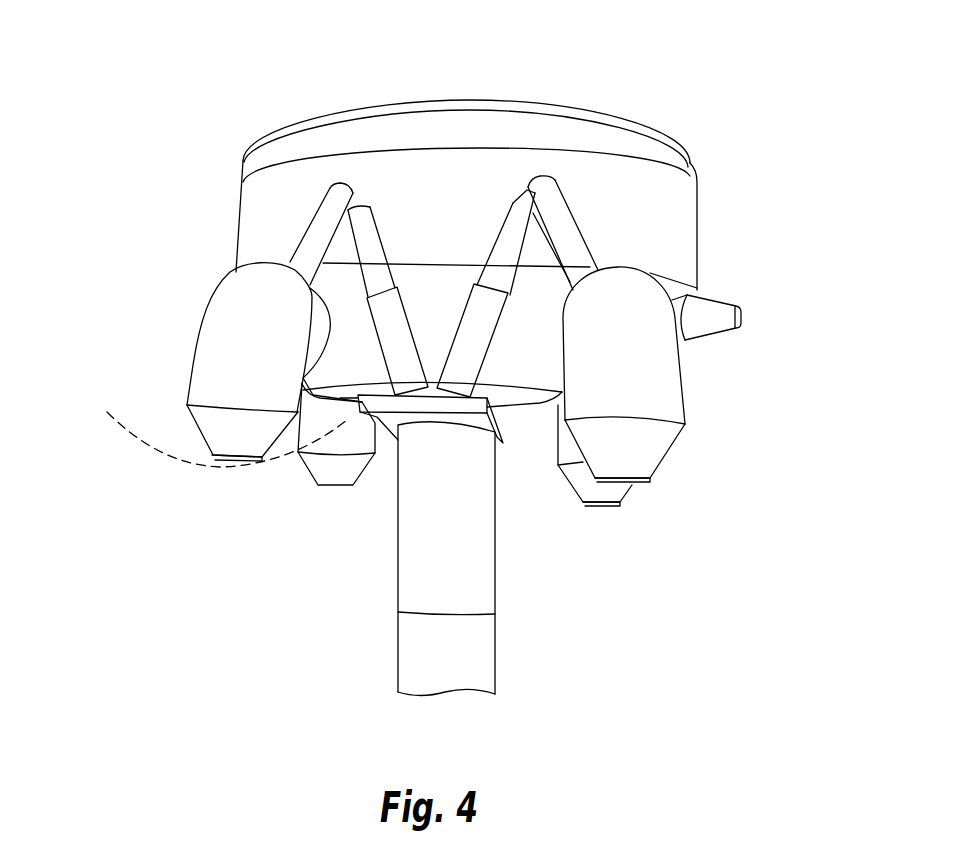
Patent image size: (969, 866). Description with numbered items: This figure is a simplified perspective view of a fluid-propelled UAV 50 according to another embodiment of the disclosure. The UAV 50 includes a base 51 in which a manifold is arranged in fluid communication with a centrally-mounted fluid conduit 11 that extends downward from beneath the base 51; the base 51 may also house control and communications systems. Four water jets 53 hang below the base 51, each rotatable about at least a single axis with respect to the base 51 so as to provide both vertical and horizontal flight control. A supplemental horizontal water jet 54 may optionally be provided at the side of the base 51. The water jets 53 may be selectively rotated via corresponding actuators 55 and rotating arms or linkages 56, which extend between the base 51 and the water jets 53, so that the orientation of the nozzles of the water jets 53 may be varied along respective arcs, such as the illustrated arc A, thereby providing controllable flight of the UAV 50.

The UAV 50 is at (553, 80).
The base 51 is at (686, 227).
The water jets 53 is at (672, 388).
The supplemental horizontal water jet 54 is at (712, 303).
The actuators 55 is at (512, 230).
The rotating arms or linkages 56 is at (326, 217).
The fluid conduit 11 is at (483, 595).